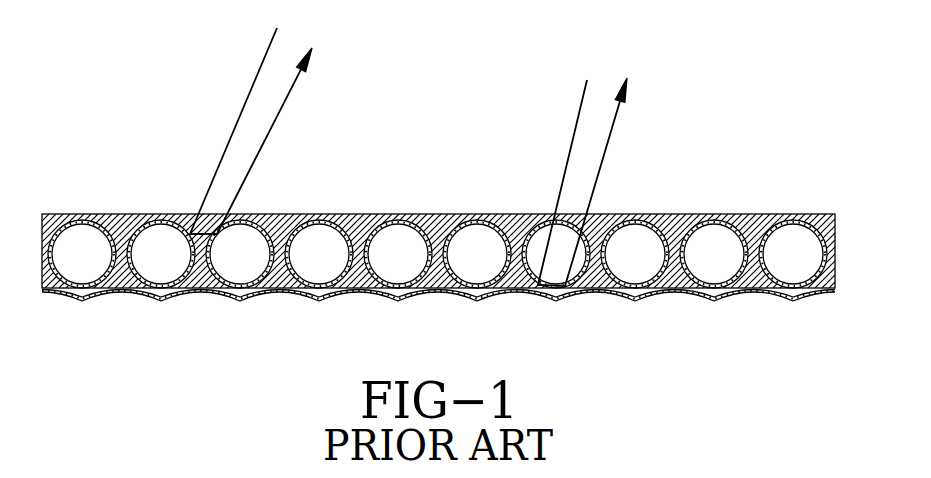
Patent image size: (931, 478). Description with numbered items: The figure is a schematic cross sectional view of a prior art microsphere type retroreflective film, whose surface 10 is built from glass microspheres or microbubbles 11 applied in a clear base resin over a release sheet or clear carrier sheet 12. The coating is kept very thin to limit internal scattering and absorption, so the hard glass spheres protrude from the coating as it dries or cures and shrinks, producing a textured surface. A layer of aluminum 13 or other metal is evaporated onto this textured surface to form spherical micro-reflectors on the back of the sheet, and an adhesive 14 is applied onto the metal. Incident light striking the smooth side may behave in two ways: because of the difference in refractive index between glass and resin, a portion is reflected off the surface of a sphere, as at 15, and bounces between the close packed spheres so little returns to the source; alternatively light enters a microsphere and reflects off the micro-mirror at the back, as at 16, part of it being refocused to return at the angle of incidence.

The surface 10 is at (84, 128).
The glass microspheres 11 is at (740, 228).
The clear carrier sheet 12 is at (673, 225).
The layer of aluminum 13 is at (747, 293).
The adhesive 14 is at (627, 295).
The light reflected off sphere surface 15 is at (227, 135).
The light reflected off micro-mirrors 16 is at (562, 157).